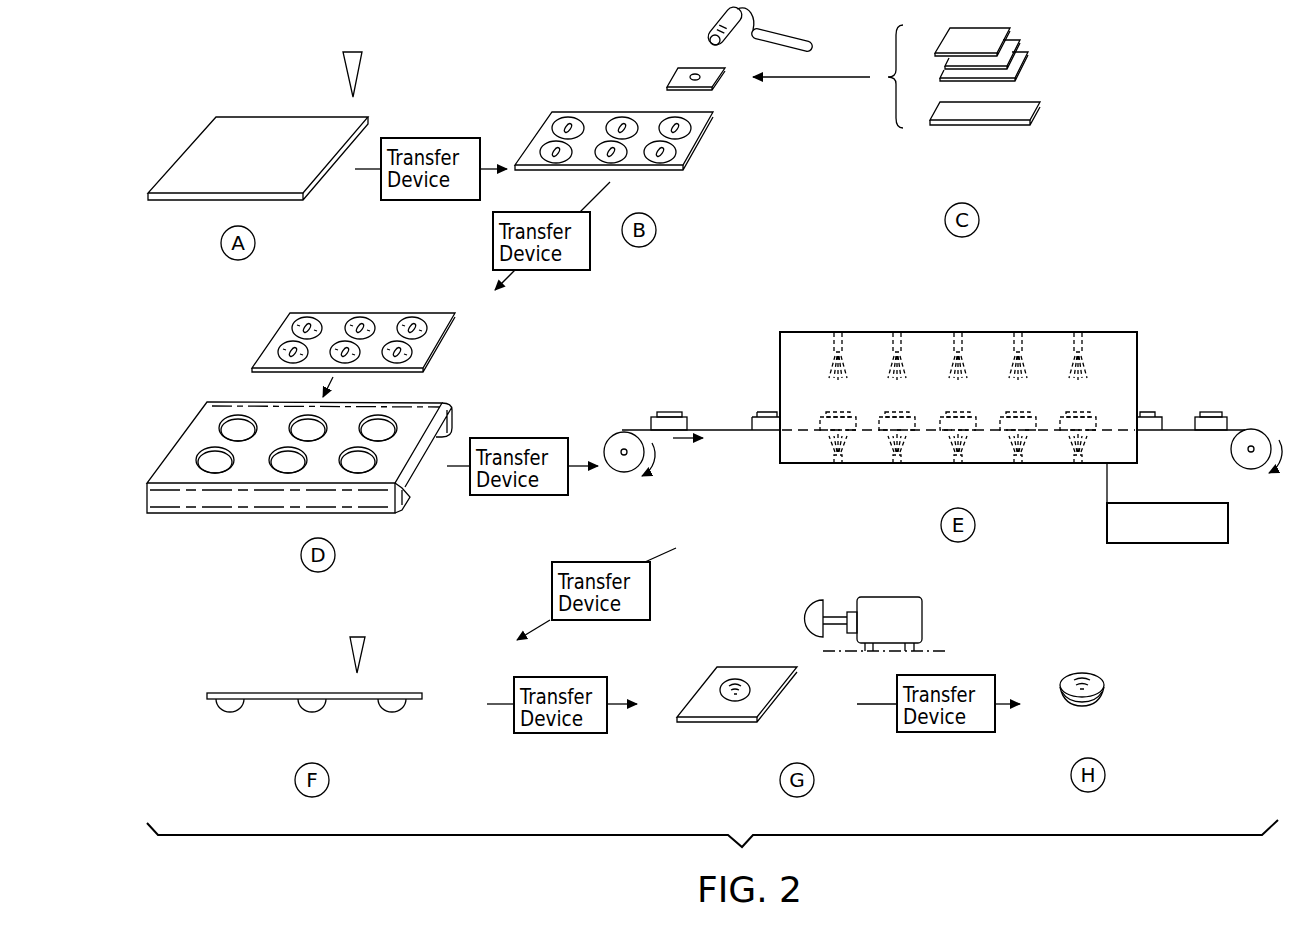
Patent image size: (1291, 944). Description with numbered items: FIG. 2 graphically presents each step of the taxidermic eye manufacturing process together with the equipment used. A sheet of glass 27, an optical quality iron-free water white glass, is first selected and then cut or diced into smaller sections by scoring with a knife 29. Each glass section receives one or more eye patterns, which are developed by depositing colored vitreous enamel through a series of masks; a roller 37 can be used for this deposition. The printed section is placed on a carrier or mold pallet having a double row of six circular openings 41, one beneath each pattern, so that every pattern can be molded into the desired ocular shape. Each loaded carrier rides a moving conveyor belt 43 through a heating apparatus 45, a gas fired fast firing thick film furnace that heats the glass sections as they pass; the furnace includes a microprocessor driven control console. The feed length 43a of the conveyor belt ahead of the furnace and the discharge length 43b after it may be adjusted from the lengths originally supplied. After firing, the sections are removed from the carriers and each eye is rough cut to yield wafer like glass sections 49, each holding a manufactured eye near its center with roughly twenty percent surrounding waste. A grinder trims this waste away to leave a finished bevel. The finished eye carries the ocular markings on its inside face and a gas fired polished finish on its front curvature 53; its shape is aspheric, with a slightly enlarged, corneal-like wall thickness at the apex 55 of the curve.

The sheet of glass 27 is at (228, 117).
The knife 29 is at (365, 58).
The roller 37 is at (710, 33).
The circular openings 41 is at (202, 453).
The conveyor belt 43 is at (607, 440).
The feed length 43a is at (702, 460).
The discharge length 43b is at (1212, 395).
The heating apparatus 45 is at (1003, 332).
The wafer like glass section 49 is at (700, 680).
The front curvature 53 is at (1100, 700).
The apex 55 is at (1078, 706).